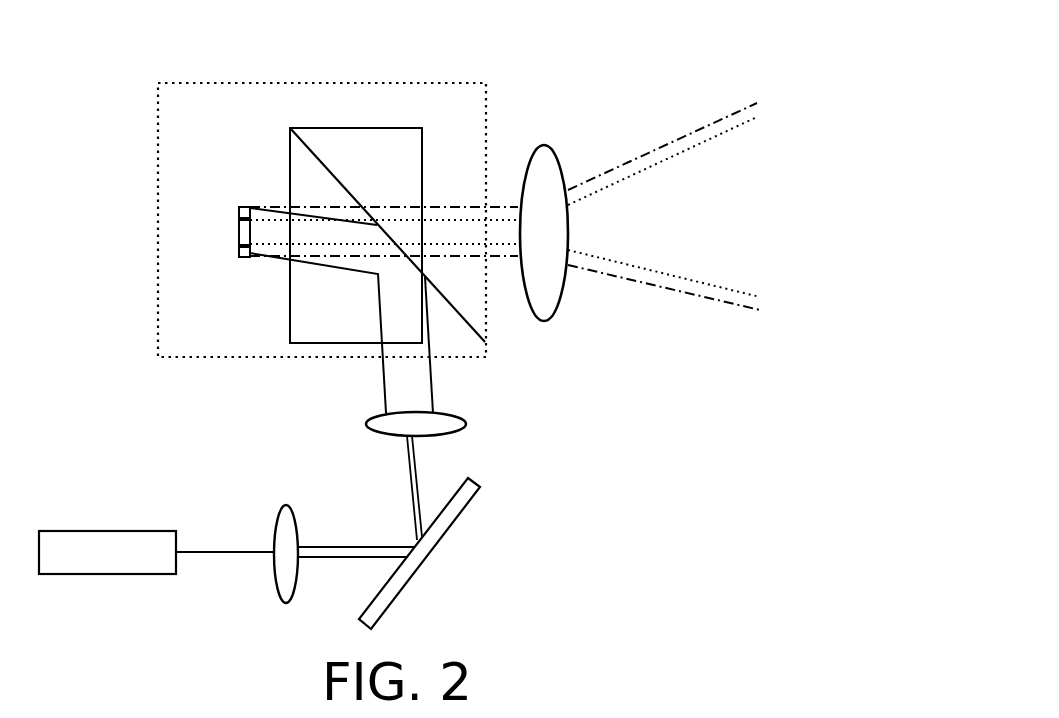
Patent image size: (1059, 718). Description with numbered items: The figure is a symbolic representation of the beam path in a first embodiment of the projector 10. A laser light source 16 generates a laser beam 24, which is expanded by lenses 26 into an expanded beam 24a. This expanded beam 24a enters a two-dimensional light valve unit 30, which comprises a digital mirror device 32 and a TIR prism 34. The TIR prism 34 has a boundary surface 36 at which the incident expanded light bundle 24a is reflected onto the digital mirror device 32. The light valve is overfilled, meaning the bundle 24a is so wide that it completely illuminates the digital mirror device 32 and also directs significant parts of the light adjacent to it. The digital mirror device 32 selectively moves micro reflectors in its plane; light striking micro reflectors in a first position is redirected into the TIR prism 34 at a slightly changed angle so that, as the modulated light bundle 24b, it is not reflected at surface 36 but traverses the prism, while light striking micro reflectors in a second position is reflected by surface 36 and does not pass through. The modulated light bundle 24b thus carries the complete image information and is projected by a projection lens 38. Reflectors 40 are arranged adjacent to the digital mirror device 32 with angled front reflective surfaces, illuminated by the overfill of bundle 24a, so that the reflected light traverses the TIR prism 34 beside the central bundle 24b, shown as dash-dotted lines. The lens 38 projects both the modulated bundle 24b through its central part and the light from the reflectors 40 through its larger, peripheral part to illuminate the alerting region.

The projector 10 is at (100, 162).
The laser light source 16 is at (102, 531).
The laser beam 24 is at (222, 552).
The expanded beam 24a is at (376, 357).
The modulated light bundle 24b is at (447, 232).
The lenses 26 is at (380, 438).
The light valve unit 30 is at (375, 83).
The digital mirror device 32 is at (240, 230).
The TIR prism 34 is at (258, 134).
The boundary surface 36 is at (455, 313).
The projection lens 38 is at (543, 147).
The reflectors 40 is at (240, 208).